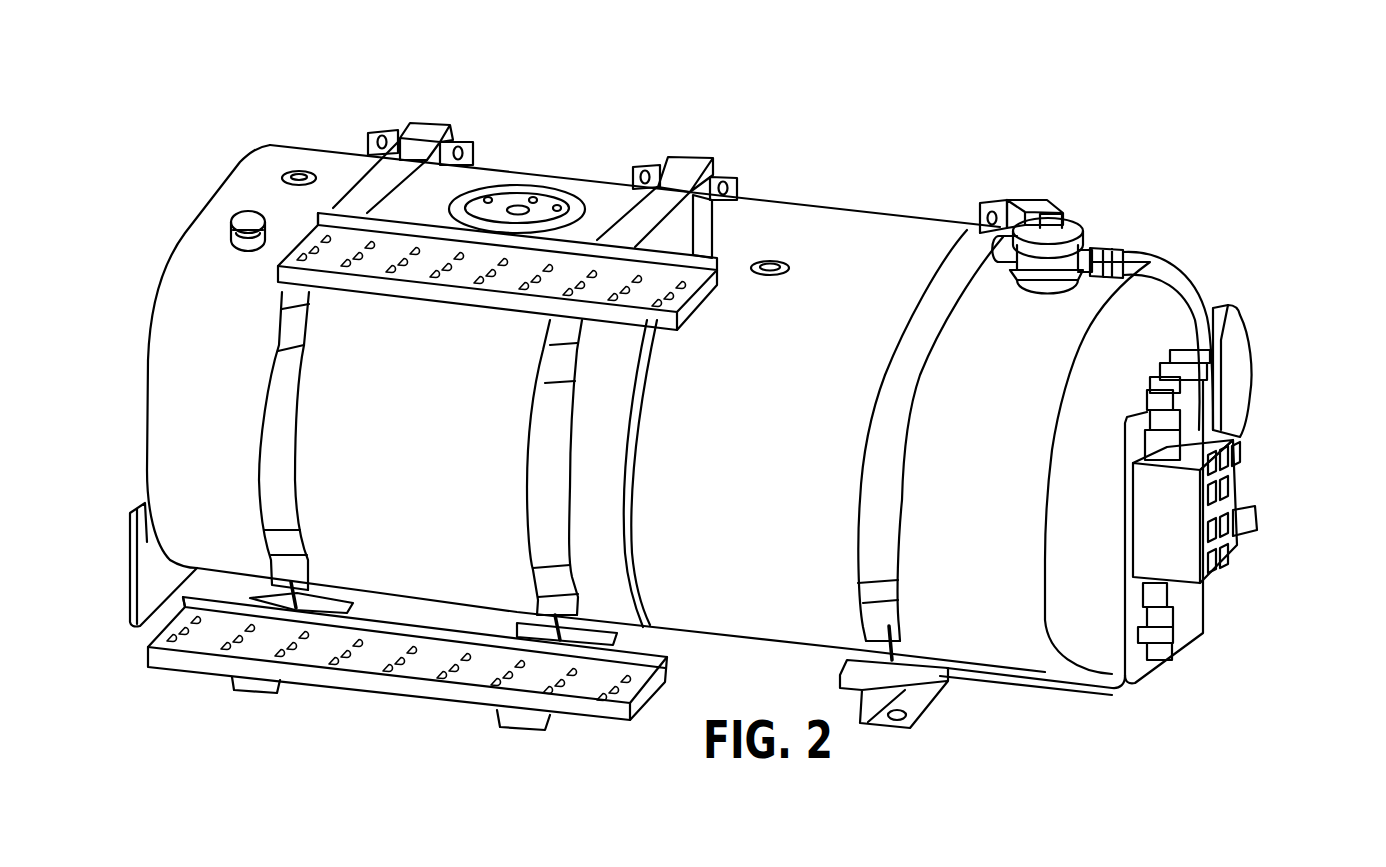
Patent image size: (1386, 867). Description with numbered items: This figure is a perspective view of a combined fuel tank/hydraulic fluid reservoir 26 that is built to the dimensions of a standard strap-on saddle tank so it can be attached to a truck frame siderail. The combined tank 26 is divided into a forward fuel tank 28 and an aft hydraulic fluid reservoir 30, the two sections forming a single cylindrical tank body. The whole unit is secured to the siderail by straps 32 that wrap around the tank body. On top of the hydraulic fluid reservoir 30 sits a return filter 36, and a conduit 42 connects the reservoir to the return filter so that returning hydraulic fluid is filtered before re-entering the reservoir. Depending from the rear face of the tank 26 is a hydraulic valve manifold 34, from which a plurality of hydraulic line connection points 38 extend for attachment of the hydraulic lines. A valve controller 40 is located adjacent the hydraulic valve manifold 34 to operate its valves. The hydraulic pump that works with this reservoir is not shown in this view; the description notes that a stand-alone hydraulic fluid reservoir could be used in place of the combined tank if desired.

The combined fuel tank/hydraulic fluid reservoir 26 is at (898, 135).
The forward fuel tank 28 is at (566, 187).
The aft hydraulic fluid reservoir 30 is at (897, 240).
The straps 32 is at (383, 177).
The hydraulic valve manifold 34 is at (1233, 537).
The return filter 36 is at (1083, 228).
The hydraulic line connection points 38 is at (1195, 350).
The valve controller 40 is at (1240, 363).
The conduit 42 is at (1200, 265).